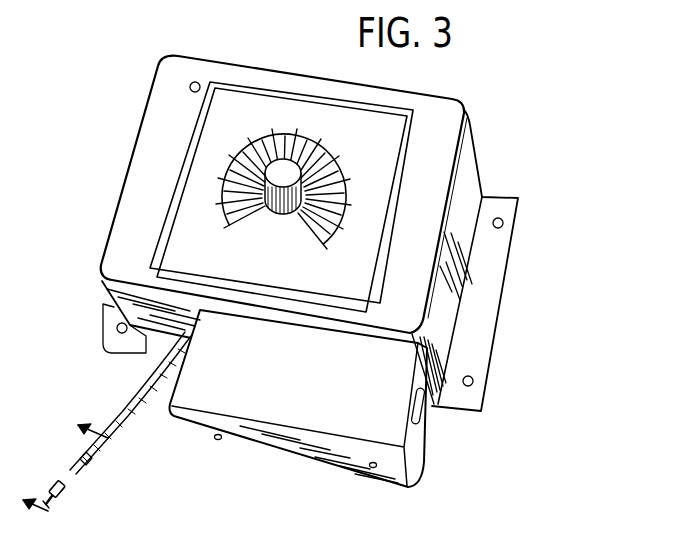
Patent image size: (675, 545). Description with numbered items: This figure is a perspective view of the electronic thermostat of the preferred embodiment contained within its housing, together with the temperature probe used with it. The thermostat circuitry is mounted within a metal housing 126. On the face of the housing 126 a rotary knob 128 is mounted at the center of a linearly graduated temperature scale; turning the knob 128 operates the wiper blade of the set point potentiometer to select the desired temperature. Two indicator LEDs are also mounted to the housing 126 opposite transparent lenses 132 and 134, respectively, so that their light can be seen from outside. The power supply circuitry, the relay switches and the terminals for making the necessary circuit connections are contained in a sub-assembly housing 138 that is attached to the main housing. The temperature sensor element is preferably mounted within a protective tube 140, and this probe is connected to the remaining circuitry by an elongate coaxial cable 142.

The metal housing 126 is at (463, 111).
The rotary knob 128 is at (283, 170).
The transparent lens 132 is at (468, 158).
The transparent lens 134 is at (213, 128).
The sub-assembly housing 138 is at (406, 451).
The protective tube 140 is at (82, 473).
The coaxial cable 142 is at (120, 409).